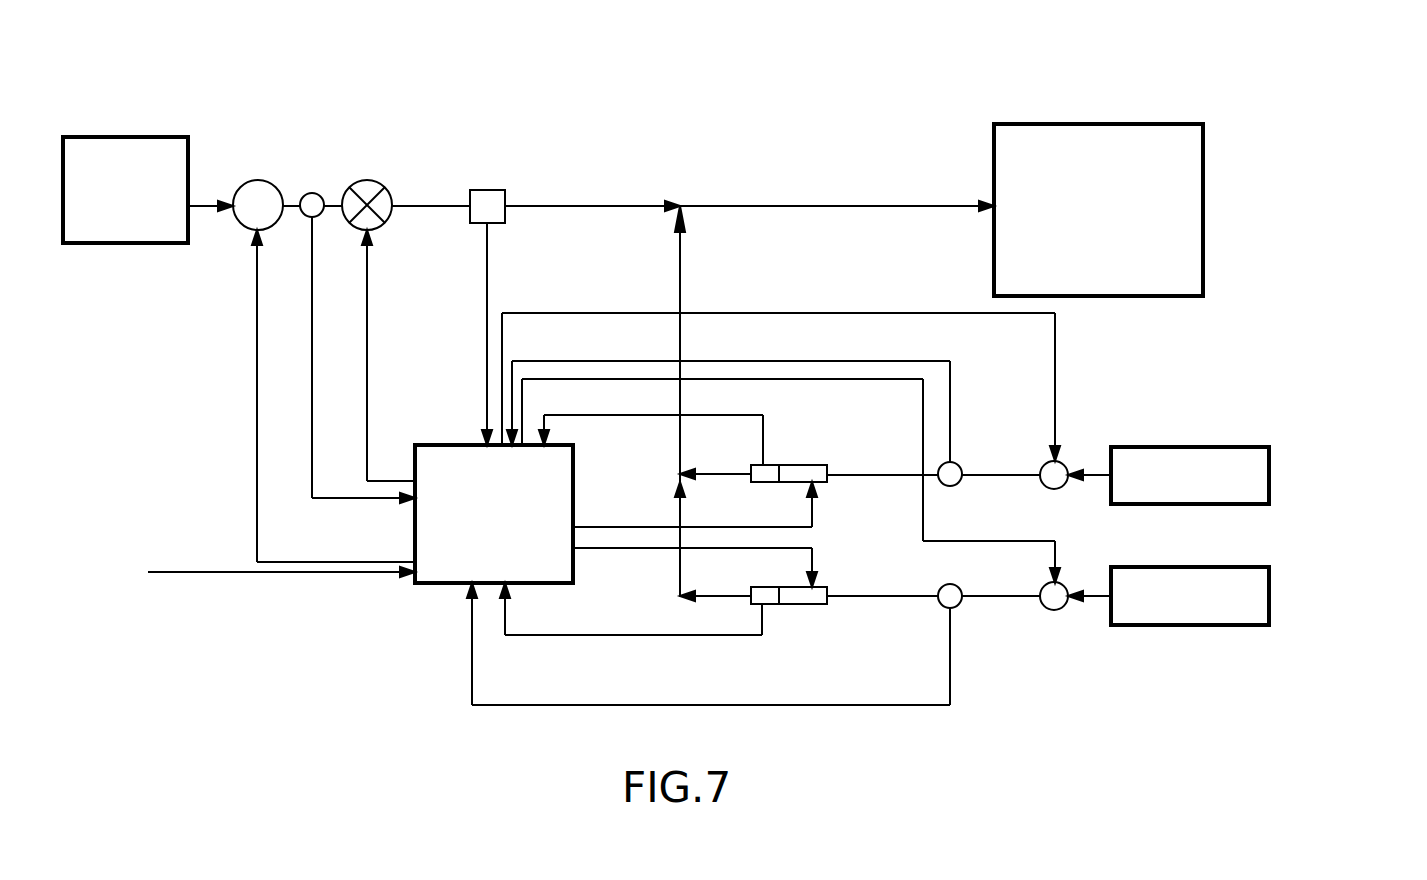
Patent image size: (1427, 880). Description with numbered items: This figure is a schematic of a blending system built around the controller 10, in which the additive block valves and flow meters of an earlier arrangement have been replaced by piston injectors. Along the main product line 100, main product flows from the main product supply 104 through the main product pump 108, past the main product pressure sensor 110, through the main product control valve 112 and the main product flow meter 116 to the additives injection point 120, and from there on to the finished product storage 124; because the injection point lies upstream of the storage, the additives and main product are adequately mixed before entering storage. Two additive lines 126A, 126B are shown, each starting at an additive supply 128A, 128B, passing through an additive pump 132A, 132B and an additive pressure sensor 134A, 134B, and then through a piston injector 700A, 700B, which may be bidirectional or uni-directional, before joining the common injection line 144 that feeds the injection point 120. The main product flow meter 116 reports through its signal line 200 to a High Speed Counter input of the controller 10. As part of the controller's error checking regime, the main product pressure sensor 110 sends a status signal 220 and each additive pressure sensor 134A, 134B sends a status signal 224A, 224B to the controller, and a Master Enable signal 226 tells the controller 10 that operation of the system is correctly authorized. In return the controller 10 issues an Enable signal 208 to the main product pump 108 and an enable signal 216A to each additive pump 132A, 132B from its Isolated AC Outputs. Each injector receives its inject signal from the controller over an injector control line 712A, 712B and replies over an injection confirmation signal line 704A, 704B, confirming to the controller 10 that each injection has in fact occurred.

The controller 10 is at (437, 585).
The main product line 100 is at (563, 207).
The main product supply 104 is at (125, 137).
The main product pump 108 is at (252, 181).
The main product pressure sensor 110 is at (312, 193).
The main product control valve 112 is at (368, 180).
The main product flow meter 116 is at (507, 196).
The additives injection point 120 is at (680, 206).
The finished product storage 124 is at (1070, 124).
The additive line 126A is at (885, 474).
The additive line 126B is at (863, 601).
The additive supply 128A is at (1269, 483).
The additive supply 128B is at (1269, 600).
The additive pump 132A is at (1062, 490).
The additive pump 132B is at (1058, 611).
The additive pressure sensor 134A is at (963, 465).
The additive pressure sensor 134B is at (950, 584).
The injection line 144 is at (680, 306).
The signal line 200 is at (490, 298).
The Enable signal 208 is at (257, 397).
The enable signal 216A is at (1054, 365).
The status signal 220 is at (312, 330).
The status signal 224A is at (830, 361).
The status signal 224B is at (937, 708).
The Master Enable signal 226 is at (190, 572).
The piston injector 700A is at (810, 464).
The piston injector 700B is at (810, 605).
The injection confirmation signal line 704A is at (707, 413).
The injection confirmation signal line 704B is at (645, 637).
The injector control line 712A is at (812, 522).
The injector control line 712B is at (812, 556).